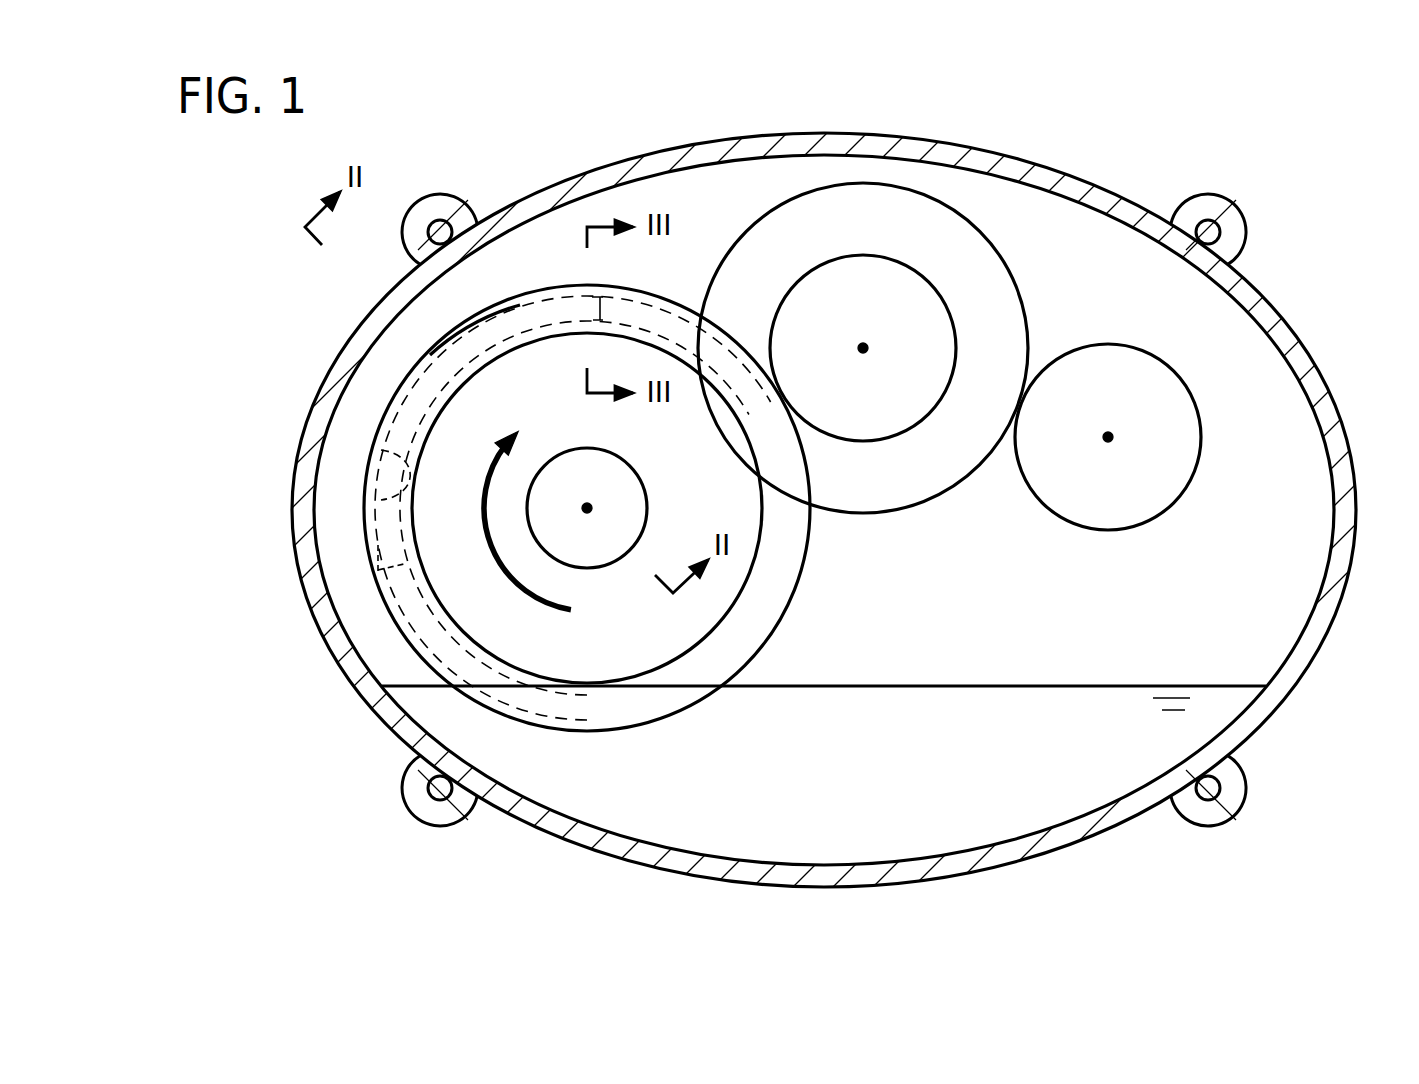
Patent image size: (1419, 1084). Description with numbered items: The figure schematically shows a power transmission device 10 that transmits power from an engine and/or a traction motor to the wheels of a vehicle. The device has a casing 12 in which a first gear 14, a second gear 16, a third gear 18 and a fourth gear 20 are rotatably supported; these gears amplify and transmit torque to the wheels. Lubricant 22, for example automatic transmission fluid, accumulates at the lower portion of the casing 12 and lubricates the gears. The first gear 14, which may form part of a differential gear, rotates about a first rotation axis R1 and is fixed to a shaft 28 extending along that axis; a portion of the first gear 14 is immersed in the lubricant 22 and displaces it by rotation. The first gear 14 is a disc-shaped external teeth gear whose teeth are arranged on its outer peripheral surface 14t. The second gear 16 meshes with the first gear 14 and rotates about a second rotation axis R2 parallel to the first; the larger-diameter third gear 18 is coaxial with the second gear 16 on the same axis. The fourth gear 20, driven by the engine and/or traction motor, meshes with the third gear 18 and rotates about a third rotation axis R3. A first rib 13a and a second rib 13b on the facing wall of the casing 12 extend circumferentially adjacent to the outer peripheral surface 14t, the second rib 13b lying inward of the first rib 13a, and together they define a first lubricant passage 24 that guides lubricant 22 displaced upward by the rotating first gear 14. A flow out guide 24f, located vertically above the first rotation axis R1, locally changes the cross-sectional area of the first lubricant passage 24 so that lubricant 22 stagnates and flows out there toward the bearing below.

The power transmission device 10 is at (440, 150).
The casing 12 is at (830, 143).
The first gear 14 is at (472, 313).
The outer peripheral surface 14t is at (427, 353).
The first rib 13a is at (403, 402).
The second rib 13b is at (397, 561).
The second gear 16 is at (829, 273).
The third gear 18 is at (892, 197).
The fourth gear 20 is at (1108, 356).
The lubricant 22 is at (1068, 800).
The first lubricant passage 24 is at (370, 495).
The flow out guide 24f is at (596, 313).
The shaft 28 is at (560, 546).
The first rotation axis R1 is at (587, 512).
The second rotation axis R2 is at (863, 350).
The third rotation axis R3 is at (1108, 440).